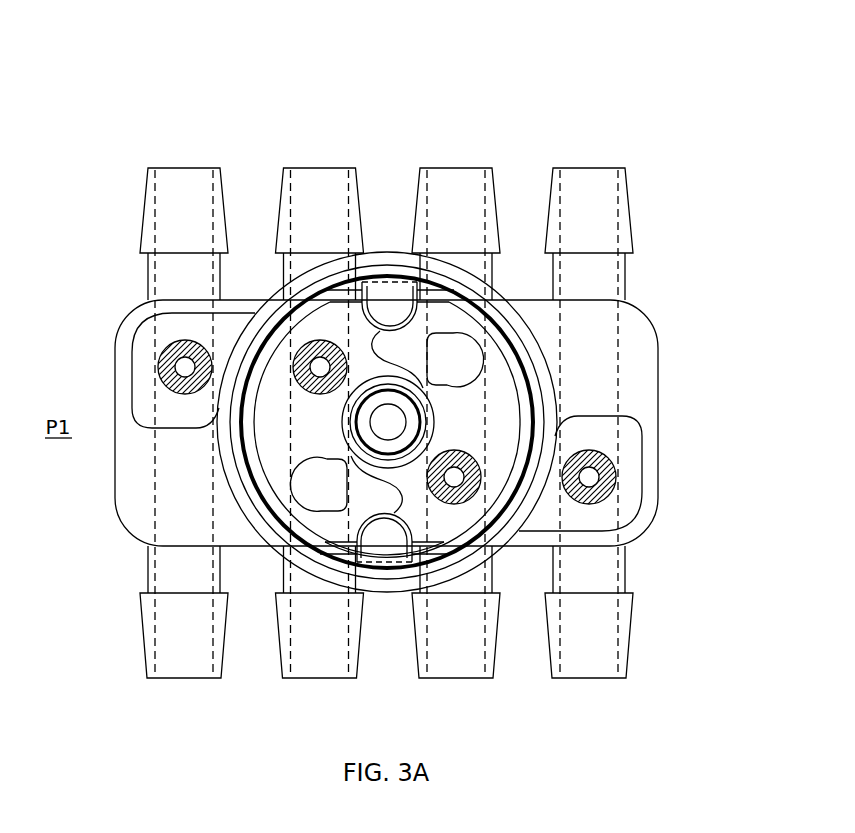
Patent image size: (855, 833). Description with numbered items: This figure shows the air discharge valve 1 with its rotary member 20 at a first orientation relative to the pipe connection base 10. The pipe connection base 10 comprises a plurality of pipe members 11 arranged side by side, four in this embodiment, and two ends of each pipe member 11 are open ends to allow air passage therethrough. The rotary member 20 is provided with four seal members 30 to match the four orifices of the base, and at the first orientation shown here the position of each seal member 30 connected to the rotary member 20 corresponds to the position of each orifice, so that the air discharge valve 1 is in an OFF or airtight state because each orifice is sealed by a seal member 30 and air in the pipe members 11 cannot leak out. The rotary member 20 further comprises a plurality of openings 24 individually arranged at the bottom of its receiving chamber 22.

The air discharge valve 1 is at (721, 28).
The pipe connection base 10 is at (631, 609).
The pipe member 11 is at (186, 182).
The rotary member 20 is at (647, 336).
The receiving chamber 22 is at (282, 460).
The openings 24 is at (447, 352).
The seal member 30 is at (161, 352).